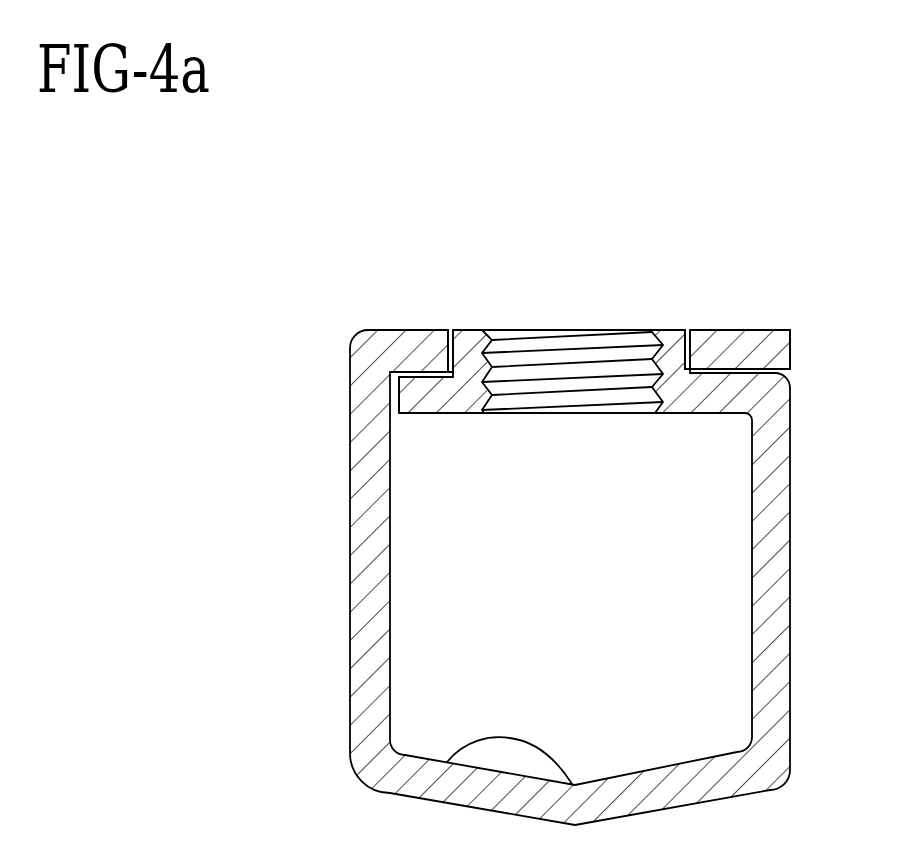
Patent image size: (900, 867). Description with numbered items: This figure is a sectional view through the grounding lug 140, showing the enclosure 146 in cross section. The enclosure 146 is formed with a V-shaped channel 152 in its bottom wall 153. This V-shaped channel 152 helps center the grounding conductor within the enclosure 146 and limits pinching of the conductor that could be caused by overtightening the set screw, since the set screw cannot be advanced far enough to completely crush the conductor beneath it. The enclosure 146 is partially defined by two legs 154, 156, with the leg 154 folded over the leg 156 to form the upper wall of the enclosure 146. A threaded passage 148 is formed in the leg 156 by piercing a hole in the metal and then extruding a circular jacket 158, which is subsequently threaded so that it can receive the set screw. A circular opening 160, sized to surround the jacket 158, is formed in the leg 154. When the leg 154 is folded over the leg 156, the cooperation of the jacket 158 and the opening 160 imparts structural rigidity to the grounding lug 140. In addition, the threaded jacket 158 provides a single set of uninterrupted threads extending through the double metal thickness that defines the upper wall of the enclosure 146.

The canister assembly 140 is at (200, 291).
The enclosure 146 is at (755, 490).
The threaded passage 148 is at (518, 350).
The V-shaped channel 152 is at (390, 793).
The bottom wall 153 is at (610, 822).
The leg 154 is at (768, 329).
The leg 156 is at (427, 415).
The circular jacket 158 is at (468, 330).
The circular opening 160 is at (682, 330).